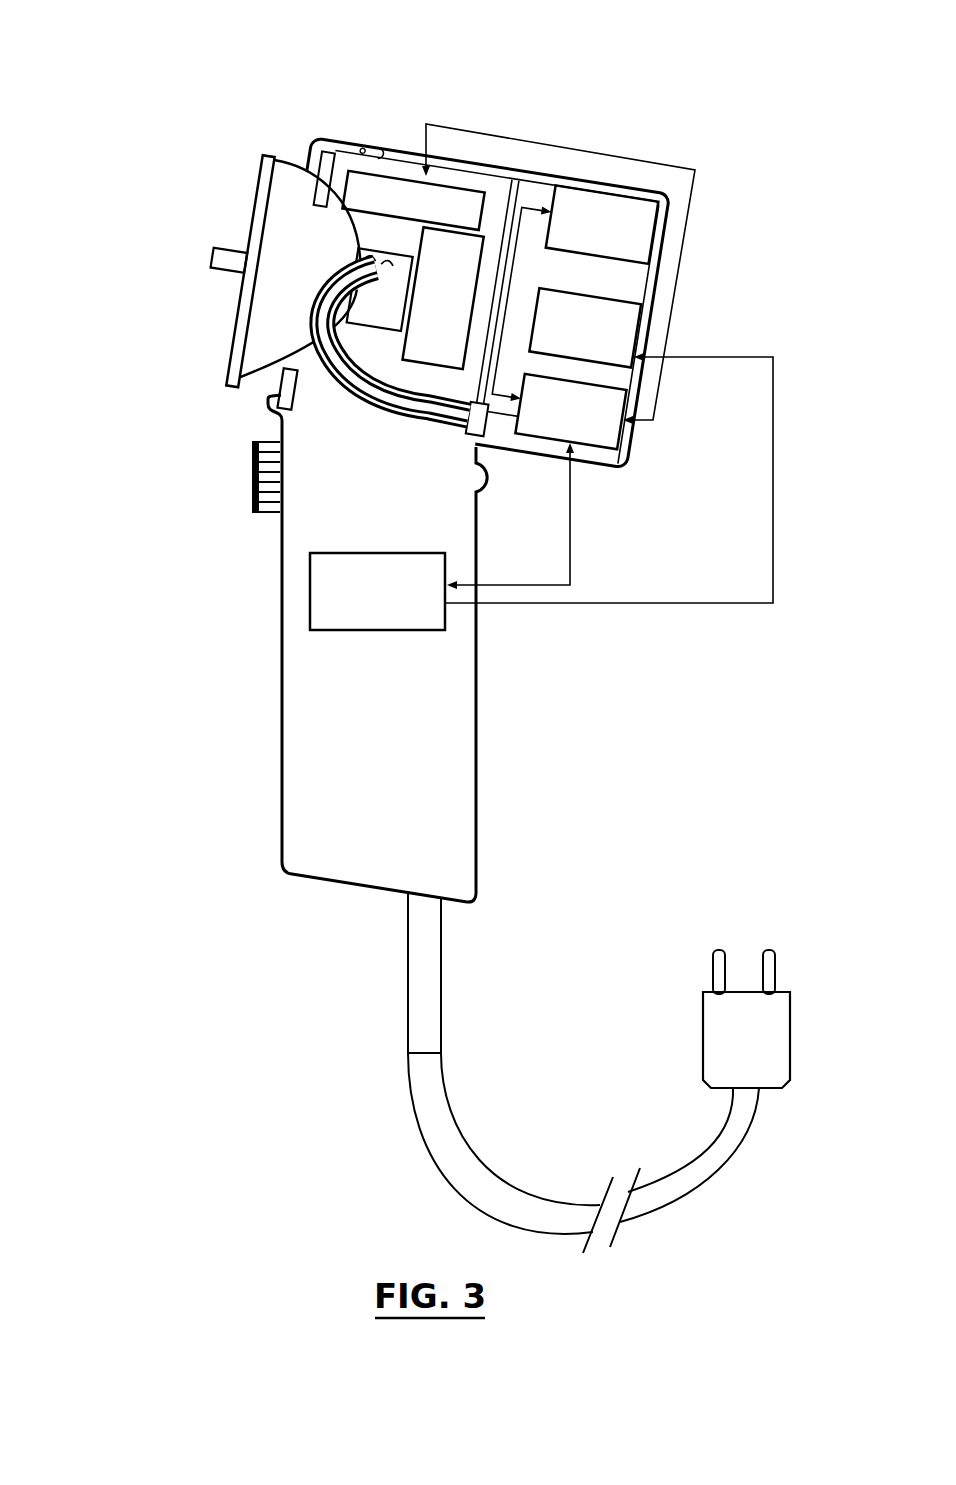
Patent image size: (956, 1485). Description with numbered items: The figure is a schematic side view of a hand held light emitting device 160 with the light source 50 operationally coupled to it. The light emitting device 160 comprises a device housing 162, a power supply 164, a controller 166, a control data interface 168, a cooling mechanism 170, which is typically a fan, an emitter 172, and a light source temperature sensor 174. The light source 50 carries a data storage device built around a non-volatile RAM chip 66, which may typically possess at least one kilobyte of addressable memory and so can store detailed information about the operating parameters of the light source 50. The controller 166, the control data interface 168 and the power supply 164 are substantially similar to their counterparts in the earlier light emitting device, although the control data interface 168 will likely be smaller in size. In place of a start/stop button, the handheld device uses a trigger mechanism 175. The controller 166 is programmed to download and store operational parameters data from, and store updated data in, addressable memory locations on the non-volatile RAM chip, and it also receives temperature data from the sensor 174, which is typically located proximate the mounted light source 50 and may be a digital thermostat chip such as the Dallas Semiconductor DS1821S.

The hand held light emitting device 160 is at (420, 53).
The device housing 162 is at (258, 605).
The power supply 164 is at (413, 631).
The controller 166 is at (627, 443).
The control data interface 168 is at (591, 190).
The cooling mechanism 170 is at (643, 320).
The emitter 172 is at (245, 178).
The light source temperature sensor 174 is at (382, 152).
The trigger mechanism 175 is at (256, 478).
The light source 50 is at (228, 306).
The non-volatile RAM chip 66 is at (363, 260).